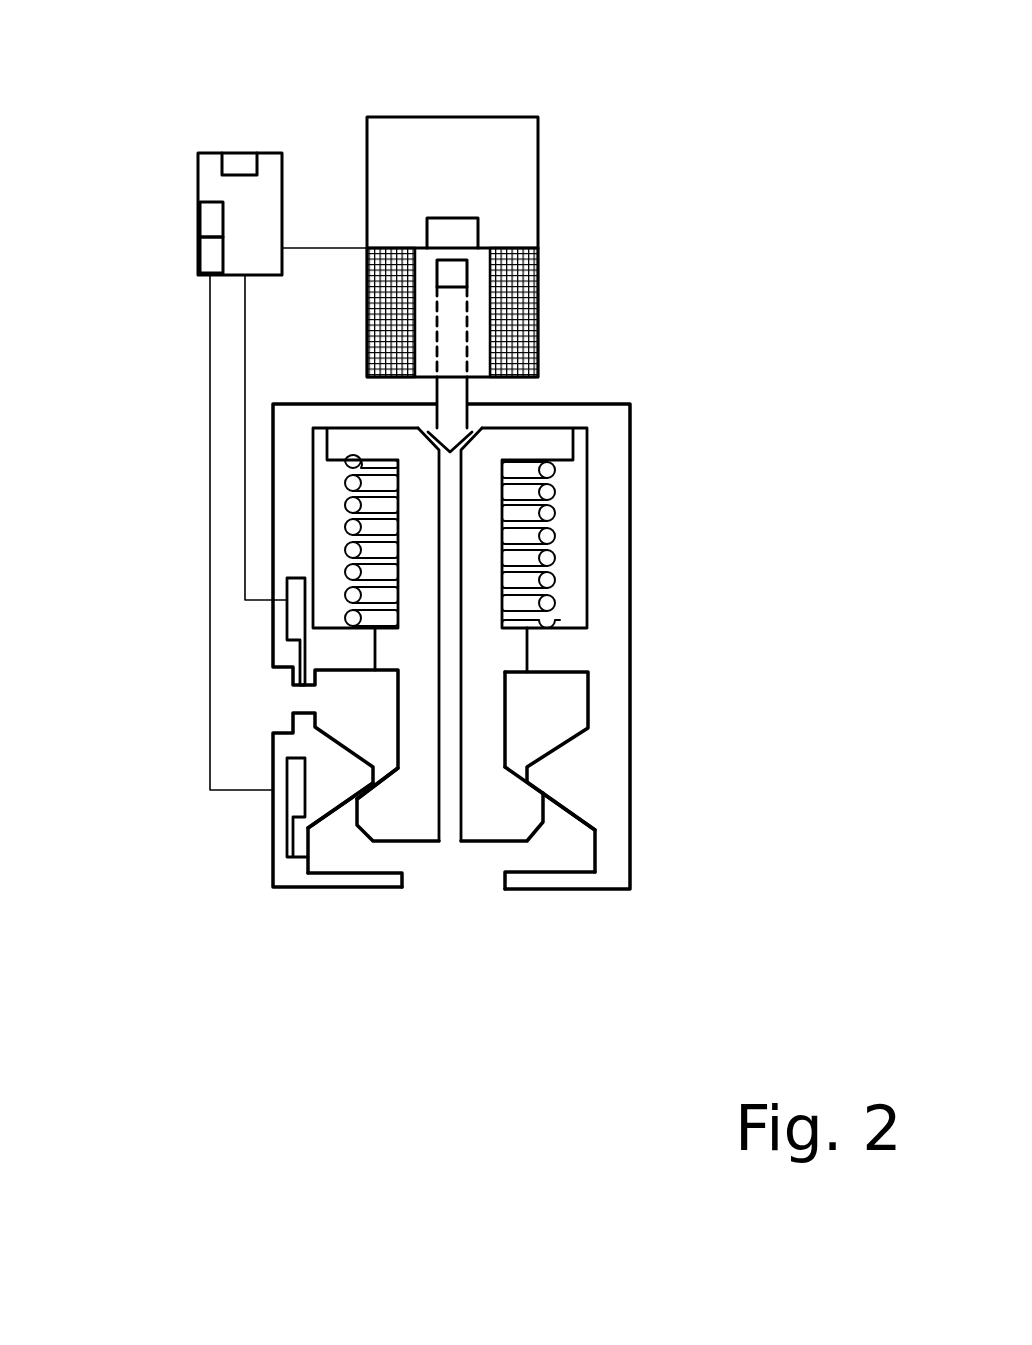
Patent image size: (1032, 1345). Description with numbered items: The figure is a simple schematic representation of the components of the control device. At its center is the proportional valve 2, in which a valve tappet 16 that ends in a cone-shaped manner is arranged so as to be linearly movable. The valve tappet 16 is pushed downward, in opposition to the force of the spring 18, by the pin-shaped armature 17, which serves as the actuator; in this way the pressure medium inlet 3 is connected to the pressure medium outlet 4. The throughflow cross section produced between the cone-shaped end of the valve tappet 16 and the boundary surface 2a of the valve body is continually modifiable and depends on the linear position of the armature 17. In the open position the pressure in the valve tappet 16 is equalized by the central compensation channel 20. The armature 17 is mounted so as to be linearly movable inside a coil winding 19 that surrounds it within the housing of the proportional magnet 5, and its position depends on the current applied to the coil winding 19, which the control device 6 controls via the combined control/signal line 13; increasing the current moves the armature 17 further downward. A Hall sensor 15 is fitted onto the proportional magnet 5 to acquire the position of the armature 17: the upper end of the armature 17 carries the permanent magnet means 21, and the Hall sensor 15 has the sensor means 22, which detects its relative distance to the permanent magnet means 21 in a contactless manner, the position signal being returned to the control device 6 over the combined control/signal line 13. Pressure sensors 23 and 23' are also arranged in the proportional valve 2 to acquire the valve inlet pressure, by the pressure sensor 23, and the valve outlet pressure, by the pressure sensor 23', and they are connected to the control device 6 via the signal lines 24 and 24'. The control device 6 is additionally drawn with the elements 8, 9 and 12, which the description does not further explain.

The proportional valve 2 is at (632, 640).
The boundary surface 2a is at (542, 792).
The pressure medium inlet 3 is at (307, 698).
The pressure medium outlet 4 is at (448, 877).
The proportional magnet 5 is at (538, 310).
The control device 6 is at (198, 158).
The signal input 8 is at (198, 217).
The power supply connection 9 is at (237, 152).
The signal input 12 is at (198, 262).
The combined control/signal line 13 is at (343, 248).
The Hall sensor 15 is at (538, 182).
The valve tappet 16 is at (510, 807).
The armature 17 is at (470, 393).
The spring 18 is at (558, 577).
The coil winding 19 is at (367, 340).
The central compensation channel 20 is at (450, 518).
The permanent magnet means 21 is at (470, 272).
The sensor means 22 is at (448, 217).
The pressure sensor 23 is at (182, 631).
The pressure sensor 23' is at (188, 807).
The signal line 24 is at (166, 437).
The signal line 24' is at (173, 532).